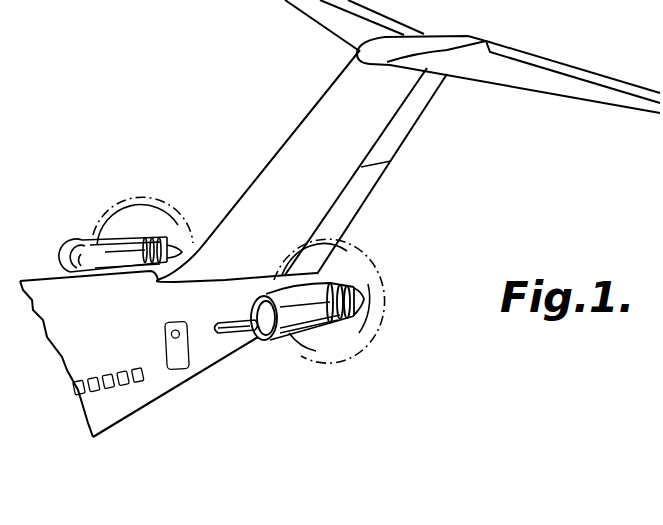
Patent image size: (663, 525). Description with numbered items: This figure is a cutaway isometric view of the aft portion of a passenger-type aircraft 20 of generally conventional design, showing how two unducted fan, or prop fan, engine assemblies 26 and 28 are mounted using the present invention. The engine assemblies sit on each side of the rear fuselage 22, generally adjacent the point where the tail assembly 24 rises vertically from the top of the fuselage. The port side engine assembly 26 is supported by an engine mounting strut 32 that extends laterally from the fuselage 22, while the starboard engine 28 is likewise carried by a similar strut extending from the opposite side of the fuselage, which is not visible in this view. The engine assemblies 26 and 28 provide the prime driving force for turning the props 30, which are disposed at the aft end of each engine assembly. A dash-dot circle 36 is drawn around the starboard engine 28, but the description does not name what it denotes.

The passenger-type aircraft 20 is at (167, 408).
The rear fuselage 22 is at (205, 363).
The tail assembly 24 is at (337, 147).
The port side engine assembly 26 is at (298, 320).
The starboard engine assembly 28 is at (90, 240).
The props 30 is at (380, 316).
The engine mounting strut 32 is at (233, 338).
The engine inlet circle (left) 36 is at (150, 200).